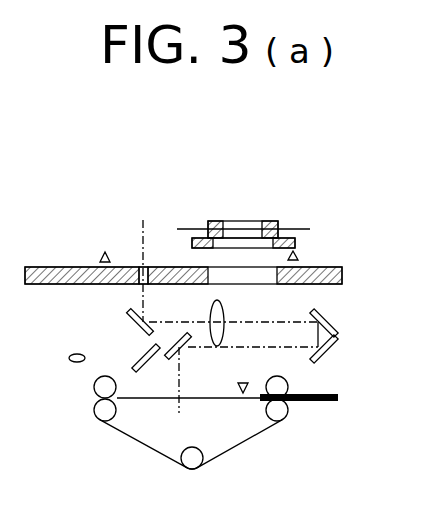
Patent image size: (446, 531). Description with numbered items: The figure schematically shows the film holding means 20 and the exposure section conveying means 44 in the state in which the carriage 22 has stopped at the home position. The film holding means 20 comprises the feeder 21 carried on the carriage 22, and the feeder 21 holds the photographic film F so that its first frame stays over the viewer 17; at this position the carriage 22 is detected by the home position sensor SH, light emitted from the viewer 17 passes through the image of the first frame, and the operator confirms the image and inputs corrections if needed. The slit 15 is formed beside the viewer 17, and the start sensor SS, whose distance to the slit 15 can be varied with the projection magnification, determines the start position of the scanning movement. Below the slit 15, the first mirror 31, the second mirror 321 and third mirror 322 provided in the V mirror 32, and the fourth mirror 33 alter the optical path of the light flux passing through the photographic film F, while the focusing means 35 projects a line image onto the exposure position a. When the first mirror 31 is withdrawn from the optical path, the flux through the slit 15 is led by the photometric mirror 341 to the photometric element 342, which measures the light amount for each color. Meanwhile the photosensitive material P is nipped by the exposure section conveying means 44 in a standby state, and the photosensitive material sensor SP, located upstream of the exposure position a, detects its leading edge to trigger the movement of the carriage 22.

The film holding means 20 is at (267, 190).
The feeder 21 is at (263, 221).
The carriage 22 is at (287, 238).
The photographic film F is at (190, 229).
The home position sensor SH is at (300, 258).
The viewer 17 is at (250, 286).
The slit 15 is at (143, 266).
The start sensor SS is at (105, 252).
The first mirror 31 is at (133, 324).
The focusing means 35 is at (209, 306).
The V mirror 32 is at (369, 335).
The second mirror 321 is at (335, 320).
The third mirror 322 is at (335, 352).
The fourth mirror 33 is at (187, 347).
The photometric mirror 341 is at (148, 370).
The photometric element 342 is at (70, 362).
The exposure position a is at (179, 413).
The photosensitive material sensor SP is at (243, 383).
The photosensitive material P is at (306, 393).
The exposure section conveying means 44 is at (254, 448).